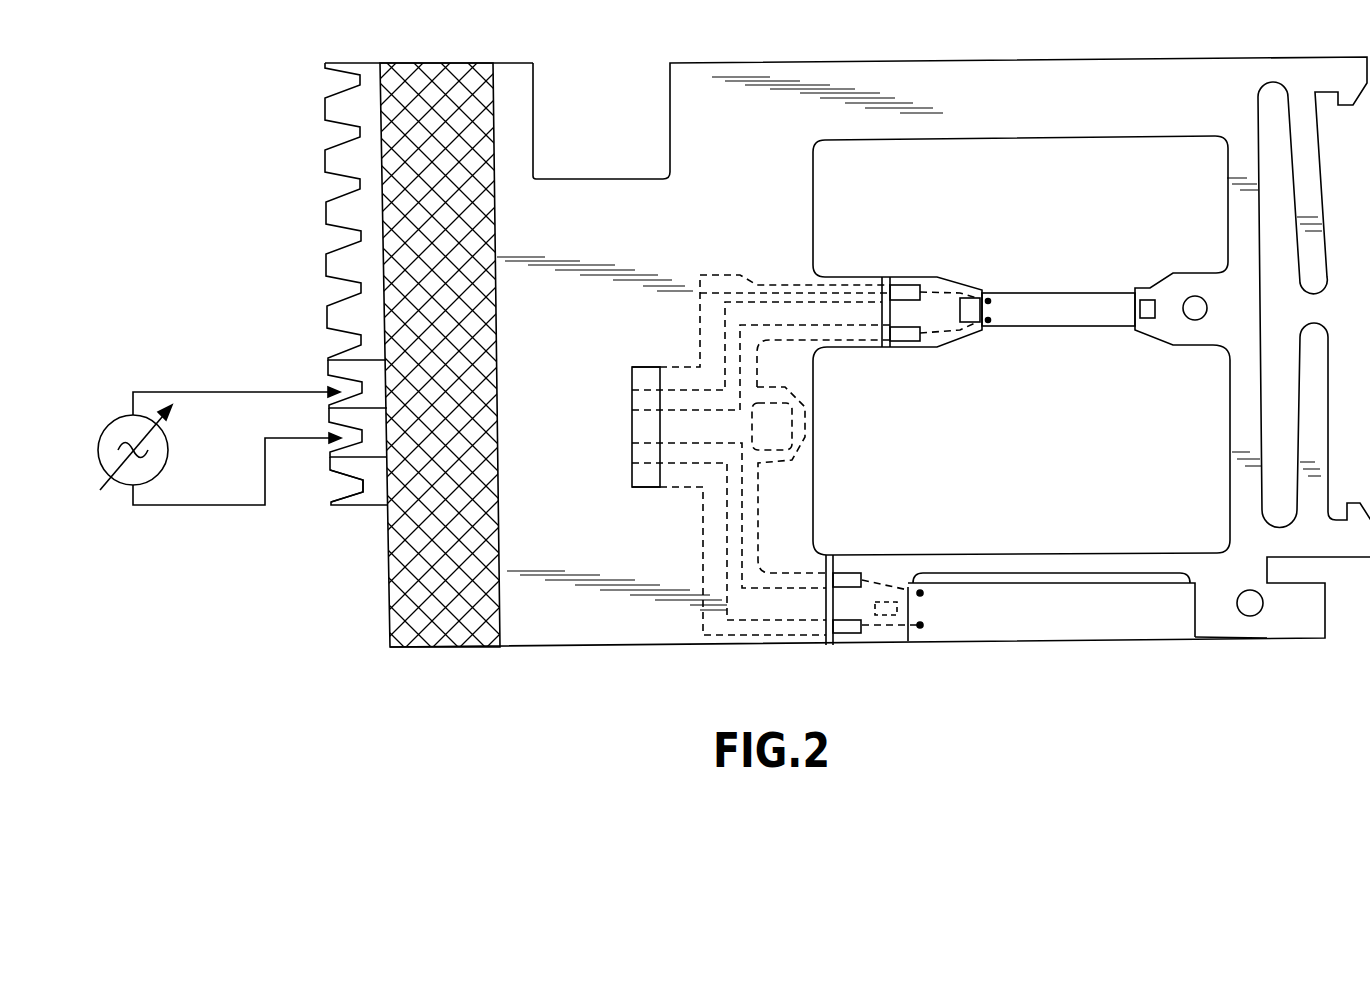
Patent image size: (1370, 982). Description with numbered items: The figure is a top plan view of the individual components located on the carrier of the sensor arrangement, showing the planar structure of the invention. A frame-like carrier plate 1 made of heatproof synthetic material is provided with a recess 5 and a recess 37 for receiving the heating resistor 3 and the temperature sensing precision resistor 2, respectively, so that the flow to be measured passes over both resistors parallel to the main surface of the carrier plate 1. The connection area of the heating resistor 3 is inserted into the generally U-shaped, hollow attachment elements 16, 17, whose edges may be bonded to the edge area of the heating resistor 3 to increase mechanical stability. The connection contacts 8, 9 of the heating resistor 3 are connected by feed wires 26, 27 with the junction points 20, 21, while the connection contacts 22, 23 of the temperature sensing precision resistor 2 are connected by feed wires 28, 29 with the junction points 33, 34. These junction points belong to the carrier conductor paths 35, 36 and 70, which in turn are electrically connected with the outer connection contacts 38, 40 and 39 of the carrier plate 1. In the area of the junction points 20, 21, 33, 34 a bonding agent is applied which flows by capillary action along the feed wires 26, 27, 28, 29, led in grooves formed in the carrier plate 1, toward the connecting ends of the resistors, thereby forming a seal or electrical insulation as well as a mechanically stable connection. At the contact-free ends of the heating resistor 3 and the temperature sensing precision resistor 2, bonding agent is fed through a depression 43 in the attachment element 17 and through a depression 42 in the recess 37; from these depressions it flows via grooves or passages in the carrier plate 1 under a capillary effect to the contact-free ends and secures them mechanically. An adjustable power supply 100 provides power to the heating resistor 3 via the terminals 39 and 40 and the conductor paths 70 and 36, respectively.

The carrier plate 1 is at (575, 635).
The temperature sensing precision resistor 2 is at (1040, 628).
The heating resistor 3 is at (1058, 310).
The recess 5 is at (1143, 145).
The connection contact 8 is at (991, 321).
The connection contact 9 is at (991, 301).
The attachment element 16 is at (977, 343).
The attachment element 17 is at (1138, 340).
The junction point 20 is at (902, 338).
The junction point 21 is at (902, 290).
The connection contact 22 is at (920, 625).
The connection contact 23 is at (920, 593).
The feed wire 26 is at (942, 333).
The feed wire 27 is at (942, 292).
The feed wire 28 is at (890, 618).
The feed wire 29 is at (893, 583).
The junction point 33 is at (840, 638).
The junction point 34 is at (852, 575).
The carrier conductor path 35 is at (673, 487).
The carrier conductor path 36 is at (670, 373).
The recess 37 is at (1188, 645).
The outer connection contact 38 is at (334, 478).
The outer connection contact 39 is at (333, 436).
The outer connection contact 40 is at (330, 390).
The depression 42 is at (1252, 616).
The depression 43 is at (1203, 315).
The carrier conductor path 70 is at (662, 432).
The adjustable power supply 100 is at (122, 420).